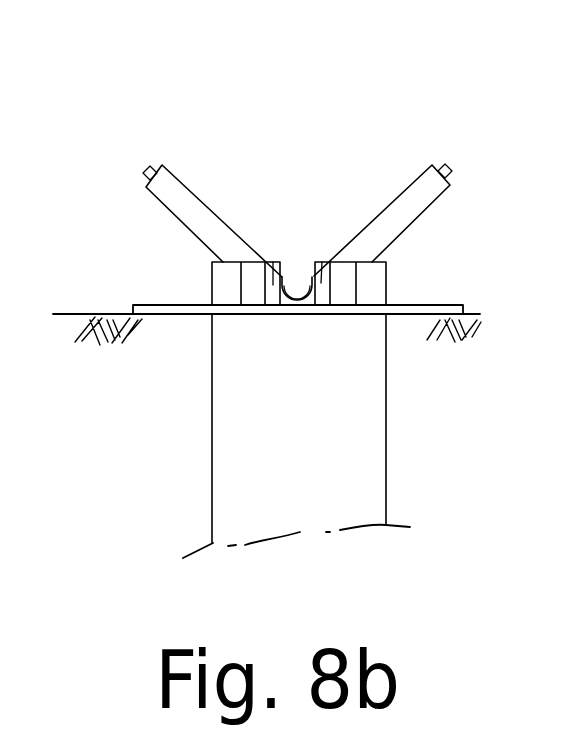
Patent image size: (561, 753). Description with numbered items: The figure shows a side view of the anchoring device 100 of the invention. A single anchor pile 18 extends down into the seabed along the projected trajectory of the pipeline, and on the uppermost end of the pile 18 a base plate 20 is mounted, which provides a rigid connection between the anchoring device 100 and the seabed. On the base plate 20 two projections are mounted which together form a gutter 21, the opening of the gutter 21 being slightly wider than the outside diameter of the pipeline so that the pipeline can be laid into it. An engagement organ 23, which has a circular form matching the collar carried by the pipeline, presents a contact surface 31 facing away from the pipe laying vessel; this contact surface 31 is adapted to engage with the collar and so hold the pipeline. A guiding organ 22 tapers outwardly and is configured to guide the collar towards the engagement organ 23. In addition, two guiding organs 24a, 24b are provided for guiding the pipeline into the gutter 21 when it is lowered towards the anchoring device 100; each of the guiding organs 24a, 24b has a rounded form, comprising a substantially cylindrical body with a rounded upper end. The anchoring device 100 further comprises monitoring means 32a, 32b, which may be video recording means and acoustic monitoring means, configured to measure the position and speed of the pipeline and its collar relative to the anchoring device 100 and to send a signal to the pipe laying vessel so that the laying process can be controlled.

The anchoring device 100 is at (246, 134).
The anchor pile 18 is at (199, 405).
The base plate 20 is at (153, 306).
The gutter 21 is at (292, 282).
The guiding organ 22 is at (252, 278).
The engagement organ 23 is at (282, 268).
The guiding organ 24a is at (157, 168).
The guiding organ 24b is at (433, 166).
The contact surface 31 is at (273, 262).
The monitoring means 32a is at (143, 174).
The monitoring means 32b is at (453, 168).